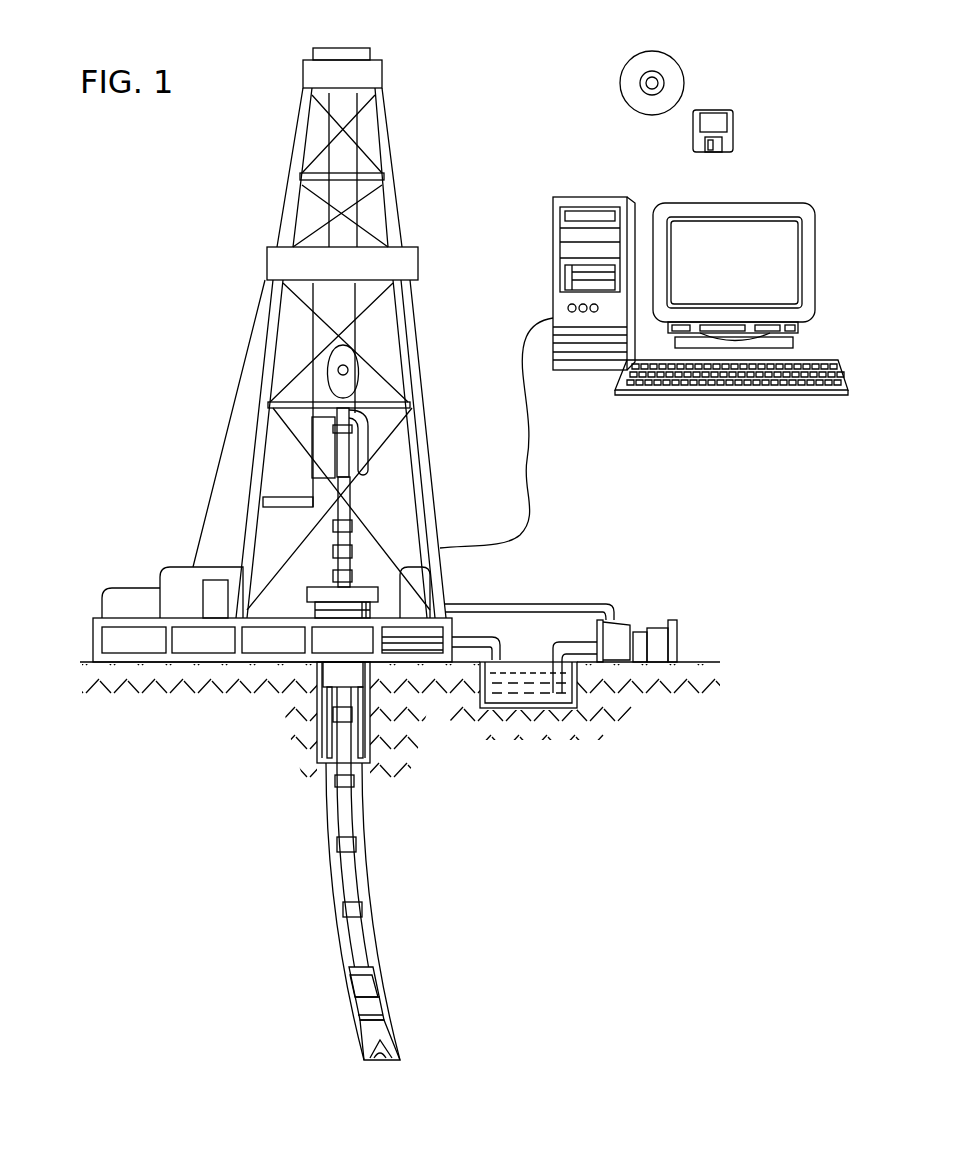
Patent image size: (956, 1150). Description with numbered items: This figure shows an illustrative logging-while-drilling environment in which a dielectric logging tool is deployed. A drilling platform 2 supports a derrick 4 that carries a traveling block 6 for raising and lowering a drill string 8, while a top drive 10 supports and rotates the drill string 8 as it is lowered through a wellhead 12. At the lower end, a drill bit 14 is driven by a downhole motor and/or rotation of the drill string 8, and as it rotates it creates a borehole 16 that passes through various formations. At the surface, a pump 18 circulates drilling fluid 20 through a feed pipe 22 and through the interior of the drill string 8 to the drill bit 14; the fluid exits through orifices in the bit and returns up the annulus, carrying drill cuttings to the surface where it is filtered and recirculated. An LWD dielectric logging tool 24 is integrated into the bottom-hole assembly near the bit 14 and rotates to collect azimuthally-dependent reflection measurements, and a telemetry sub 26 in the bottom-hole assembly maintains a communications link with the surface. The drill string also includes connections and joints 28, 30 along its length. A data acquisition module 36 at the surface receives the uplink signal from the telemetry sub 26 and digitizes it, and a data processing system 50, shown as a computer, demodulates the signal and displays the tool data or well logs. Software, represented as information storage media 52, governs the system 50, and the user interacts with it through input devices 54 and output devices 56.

The drilling platform 2 is at (93, 636).
The derrick 4 is at (397, 210).
The traveling block 6 is at (350, 370).
The drill string 8 is at (356, 823).
The top drive 10 is at (345, 450).
The wellhead 12 is at (357, 583).
The drill bit 14 is at (360, 1035).
The borehole 16 is at (368, 873).
The pump 18 is at (617, 633).
The drilling fluid 20 is at (520, 675).
The feed pipe 22 is at (490, 604).
The LWD dielectric logging tool 24 is at (384, 1006).
The telemetry sub 26 is at (352, 988).
The kelly joints 28 is at (332, 550).
The drill pipe joint 30 is at (338, 845).
The data acquisition module 36 is at (213, 580).
The data processing system 50 is at (583, 197).
The information storage media 52 is at (713, 110).
The input devices 54 is at (745, 395).
The output devices 56 is at (760, 203).